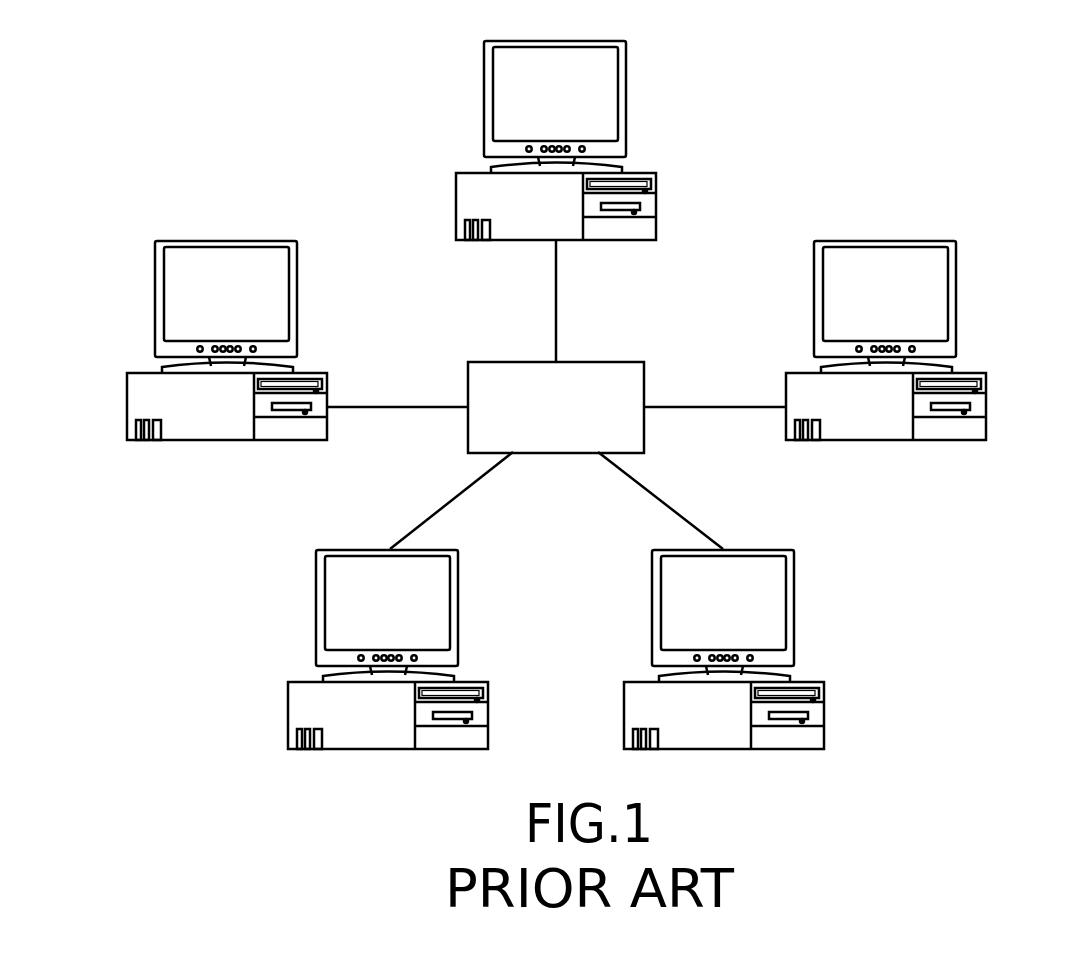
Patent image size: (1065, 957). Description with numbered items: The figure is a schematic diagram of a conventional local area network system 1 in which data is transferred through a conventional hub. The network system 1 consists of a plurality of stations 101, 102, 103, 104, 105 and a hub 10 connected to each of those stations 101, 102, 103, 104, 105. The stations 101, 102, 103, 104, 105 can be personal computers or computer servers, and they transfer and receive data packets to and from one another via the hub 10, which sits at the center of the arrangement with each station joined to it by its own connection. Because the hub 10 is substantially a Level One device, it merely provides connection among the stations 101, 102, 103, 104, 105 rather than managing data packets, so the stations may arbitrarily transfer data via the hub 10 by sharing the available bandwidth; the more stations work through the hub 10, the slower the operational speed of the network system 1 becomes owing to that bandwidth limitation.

The network system 1 is at (880, 77).
The hub 10 is at (582, 378).
The station 101 is at (628, 92).
The station 102 is at (300, 292).
The station 103 is at (460, 598).
The station 104 is at (797, 598).
The station 105 is at (957, 292).